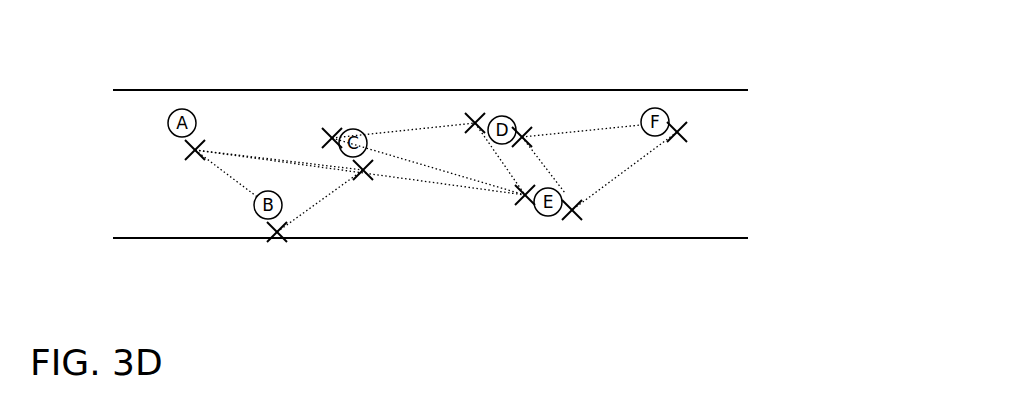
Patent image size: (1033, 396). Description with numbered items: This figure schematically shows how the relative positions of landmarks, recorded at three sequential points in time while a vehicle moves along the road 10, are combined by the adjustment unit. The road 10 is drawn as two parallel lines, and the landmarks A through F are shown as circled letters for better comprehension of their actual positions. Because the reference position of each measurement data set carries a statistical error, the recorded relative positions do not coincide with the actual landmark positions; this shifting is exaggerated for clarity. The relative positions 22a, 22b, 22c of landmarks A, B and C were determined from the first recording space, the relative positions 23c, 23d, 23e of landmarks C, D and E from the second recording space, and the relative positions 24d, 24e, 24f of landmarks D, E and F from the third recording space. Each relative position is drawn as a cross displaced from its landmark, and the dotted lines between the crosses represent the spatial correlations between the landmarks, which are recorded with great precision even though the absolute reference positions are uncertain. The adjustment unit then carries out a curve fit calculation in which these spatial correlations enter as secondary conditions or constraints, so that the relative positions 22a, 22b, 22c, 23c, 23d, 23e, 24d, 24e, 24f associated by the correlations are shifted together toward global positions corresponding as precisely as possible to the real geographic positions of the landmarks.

The road 10 is at (172, 218).
The relative position 22a is at (211, 140).
The relative position 22b is at (298, 220).
The relative position 22c is at (385, 175).
The relative position 23c is at (318, 140).
The relative position 23d is at (461, 121).
The relative position 23e is at (510, 199).
The relative position 24d is at (525, 113).
The relative position 24e is at (569, 229).
The relative position 24f is at (697, 125).